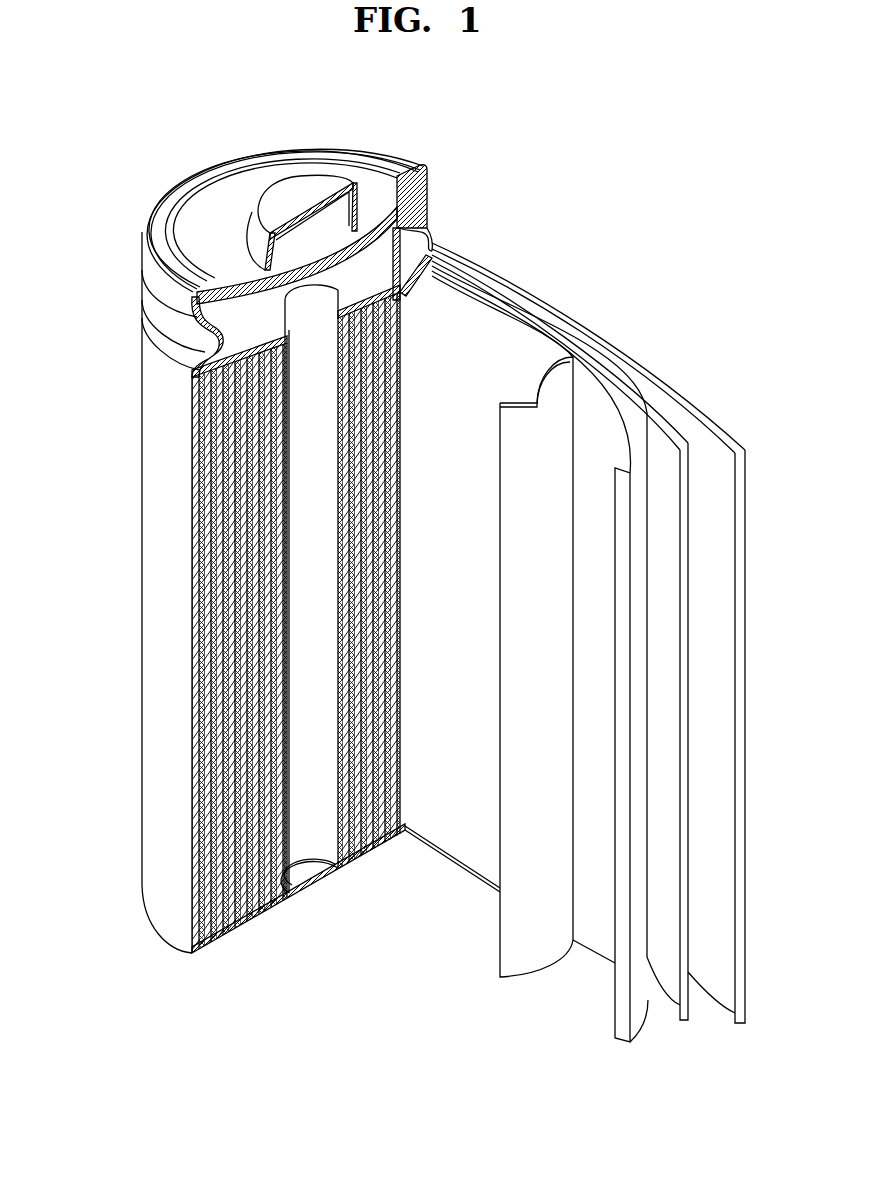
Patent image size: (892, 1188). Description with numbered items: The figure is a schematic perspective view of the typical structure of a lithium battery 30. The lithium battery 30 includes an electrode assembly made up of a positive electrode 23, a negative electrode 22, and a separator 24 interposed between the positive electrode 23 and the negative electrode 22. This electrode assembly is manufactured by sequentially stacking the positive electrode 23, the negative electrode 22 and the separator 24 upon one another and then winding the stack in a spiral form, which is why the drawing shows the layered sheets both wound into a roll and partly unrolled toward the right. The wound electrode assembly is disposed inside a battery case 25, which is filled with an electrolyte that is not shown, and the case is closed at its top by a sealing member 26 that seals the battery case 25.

The lithium battery 30 is at (379, 80).
The battery case 25 is at (148, 599).
The sealing member 26 is at (278, 192).
The negative electrode 22 is at (713, 418).
The positive electrode 23 is at (631, 412).
The separator 24 is at (537, 405).